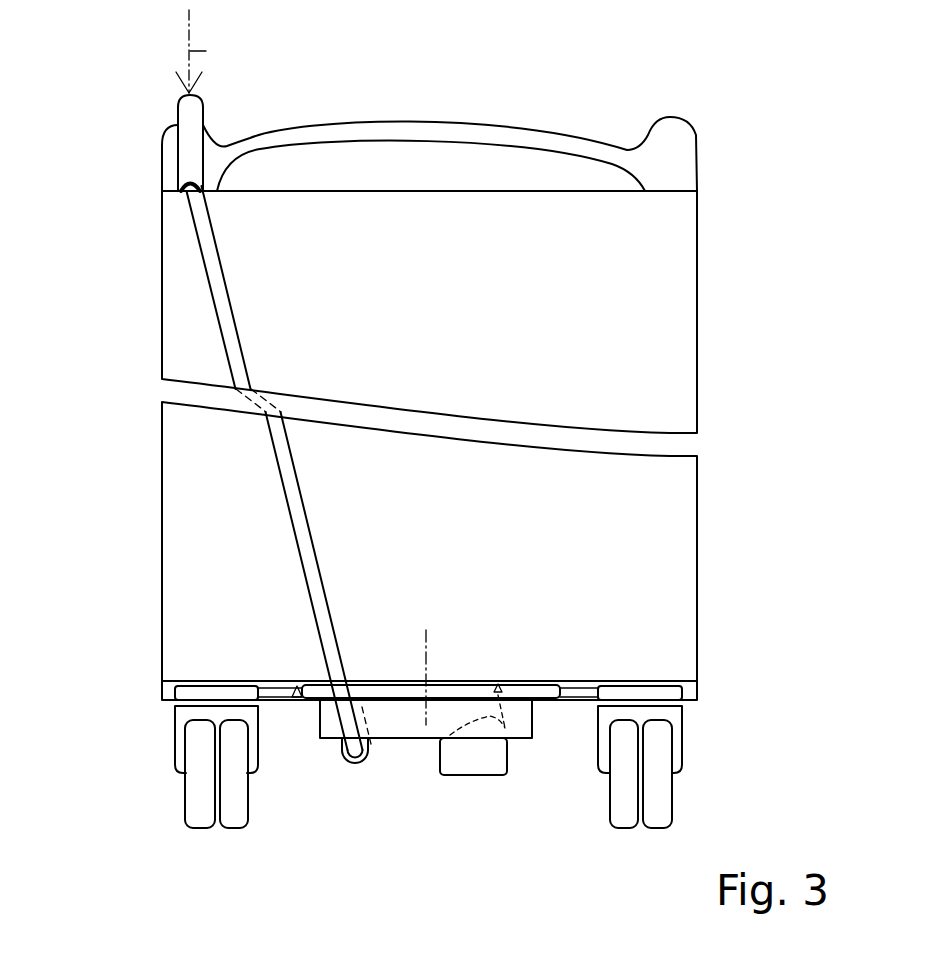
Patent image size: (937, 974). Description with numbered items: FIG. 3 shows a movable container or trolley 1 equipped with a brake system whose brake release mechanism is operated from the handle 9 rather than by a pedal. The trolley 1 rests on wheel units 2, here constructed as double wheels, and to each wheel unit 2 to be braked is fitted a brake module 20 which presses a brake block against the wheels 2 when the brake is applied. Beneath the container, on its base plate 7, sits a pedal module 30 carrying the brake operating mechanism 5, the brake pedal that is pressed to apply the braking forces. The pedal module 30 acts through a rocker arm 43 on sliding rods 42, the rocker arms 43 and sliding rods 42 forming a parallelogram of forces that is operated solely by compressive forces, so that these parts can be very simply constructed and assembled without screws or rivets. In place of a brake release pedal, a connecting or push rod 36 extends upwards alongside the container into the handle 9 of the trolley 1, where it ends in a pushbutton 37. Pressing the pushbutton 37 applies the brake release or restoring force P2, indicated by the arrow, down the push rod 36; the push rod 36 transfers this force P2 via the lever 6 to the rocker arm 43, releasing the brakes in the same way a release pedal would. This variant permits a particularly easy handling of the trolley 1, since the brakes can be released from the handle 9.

The movable container 1 is at (700, 275).
The wheel unit 2 is at (186, 826).
The brake operating mechanism 5 is at (487, 775).
The brake release mechanism 6 is at (360, 763).
The base plate 7 is at (582, 688).
The handle 9 is at (427, 120).
The brake module 20 is at (188, 693).
The pedal module 30 is at (410, 738).
The push rod 36 is at (224, 316).
The pushbutton 37 is at (190, 108).
The sliding rod 42 is at (298, 688).
The rocker arm 43 is at (470, 690).
The brake release force P2 is at (224, 51).